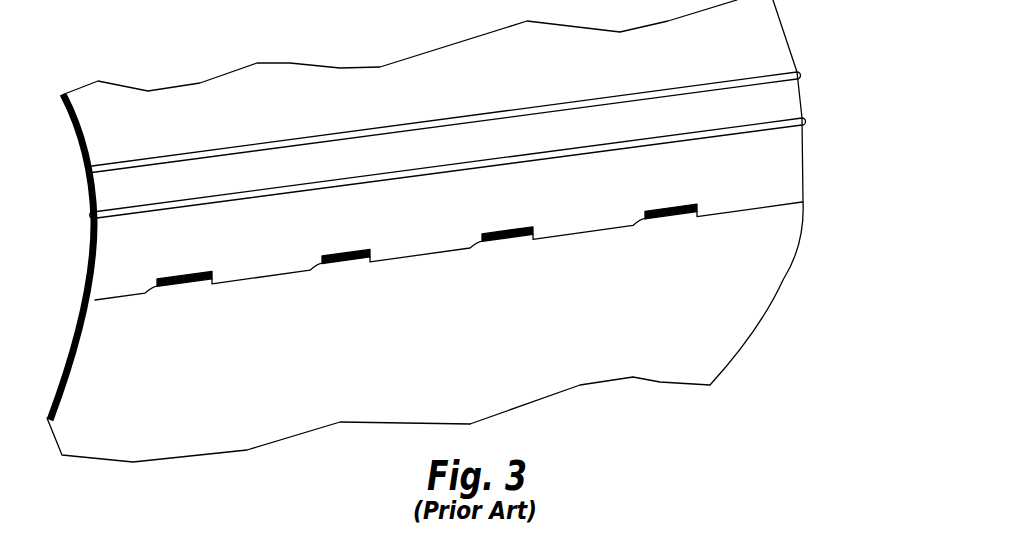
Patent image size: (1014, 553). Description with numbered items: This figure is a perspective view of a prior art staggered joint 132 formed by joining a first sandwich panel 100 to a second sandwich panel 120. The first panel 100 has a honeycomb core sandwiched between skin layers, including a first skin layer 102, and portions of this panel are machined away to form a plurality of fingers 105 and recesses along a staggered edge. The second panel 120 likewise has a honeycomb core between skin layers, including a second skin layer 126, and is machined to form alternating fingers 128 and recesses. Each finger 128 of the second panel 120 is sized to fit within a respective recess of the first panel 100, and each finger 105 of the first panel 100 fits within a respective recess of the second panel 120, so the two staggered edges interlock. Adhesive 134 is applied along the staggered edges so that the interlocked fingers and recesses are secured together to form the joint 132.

The first panel 100 is at (115, 250).
The first skin layer 102 is at (297, 236).
The fingers 105 is at (590, 222).
The second panel 120 is at (245, 407).
The second skin layer 126 is at (693, 303).
The fingers 128 is at (503, 242).
The staggered joint 132 is at (812, 193).
The adhesive 134 is at (152, 160).